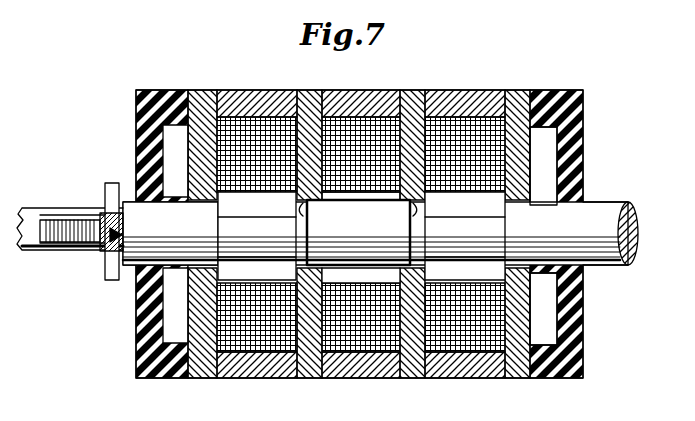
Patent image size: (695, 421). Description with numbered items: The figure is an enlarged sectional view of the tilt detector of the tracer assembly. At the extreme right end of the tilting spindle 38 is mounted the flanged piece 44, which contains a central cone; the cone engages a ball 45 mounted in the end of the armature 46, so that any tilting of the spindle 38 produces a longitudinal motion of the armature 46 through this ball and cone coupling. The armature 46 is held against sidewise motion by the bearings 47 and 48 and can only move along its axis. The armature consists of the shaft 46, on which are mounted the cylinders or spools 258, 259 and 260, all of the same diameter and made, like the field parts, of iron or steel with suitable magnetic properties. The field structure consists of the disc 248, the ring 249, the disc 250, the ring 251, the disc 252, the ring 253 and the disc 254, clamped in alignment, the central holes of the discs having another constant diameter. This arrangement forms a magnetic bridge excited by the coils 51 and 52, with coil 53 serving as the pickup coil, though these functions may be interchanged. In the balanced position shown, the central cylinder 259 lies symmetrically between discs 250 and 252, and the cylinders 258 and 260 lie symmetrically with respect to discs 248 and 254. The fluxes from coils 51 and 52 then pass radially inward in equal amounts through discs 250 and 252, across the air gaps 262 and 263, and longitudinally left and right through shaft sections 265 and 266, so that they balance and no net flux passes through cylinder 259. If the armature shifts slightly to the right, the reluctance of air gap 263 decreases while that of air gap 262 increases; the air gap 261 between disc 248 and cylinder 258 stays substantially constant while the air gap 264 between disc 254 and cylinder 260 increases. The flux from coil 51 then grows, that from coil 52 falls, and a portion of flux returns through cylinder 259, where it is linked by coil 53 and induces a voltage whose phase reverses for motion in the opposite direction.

The tilting spindle 38 is at (32, 250).
The flanged piece 44 is at (110, 267).
The ball 45 is at (92, 248).
The armature 46 is at (133, 207).
The bearing 47 is at (133, 268).
The bearing 48 is at (587, 203).
The coil 51 is at (248, 327).
The coil 52 is at (465, 333).
The pickup coil 53 is at (345, 135).
The disc 248 is at (198, 90).
The ring 249 is at (243, 93).
The disc 250 is at (306, 100).
The ring 251 is at (410, 95).
The disc 252 is at (482, 100).
The ring 253 is at (520, 95).
The disc 254 is at (522, 92).
The cylinder 258 is at (180, 210).
The central cylinder 259 is at (350, 247).
The cylinder 260 is at (530, 225).
The air gap 261 is at (220, 200).
The air gap 262 is at (310, 205).
The air gap 263 is at (413, 203).
The air gap 264 is at (505, 268).
The shaft section 265 is at (235, 242).
The shaft section 266 is at (450, 237).